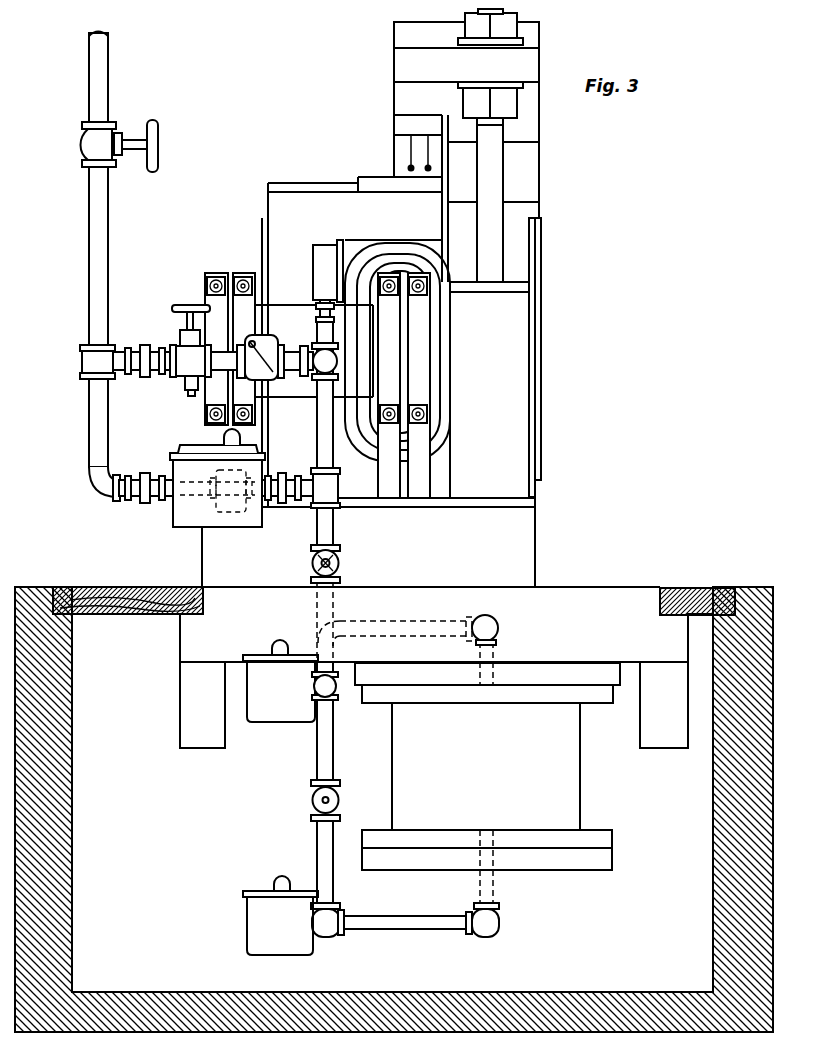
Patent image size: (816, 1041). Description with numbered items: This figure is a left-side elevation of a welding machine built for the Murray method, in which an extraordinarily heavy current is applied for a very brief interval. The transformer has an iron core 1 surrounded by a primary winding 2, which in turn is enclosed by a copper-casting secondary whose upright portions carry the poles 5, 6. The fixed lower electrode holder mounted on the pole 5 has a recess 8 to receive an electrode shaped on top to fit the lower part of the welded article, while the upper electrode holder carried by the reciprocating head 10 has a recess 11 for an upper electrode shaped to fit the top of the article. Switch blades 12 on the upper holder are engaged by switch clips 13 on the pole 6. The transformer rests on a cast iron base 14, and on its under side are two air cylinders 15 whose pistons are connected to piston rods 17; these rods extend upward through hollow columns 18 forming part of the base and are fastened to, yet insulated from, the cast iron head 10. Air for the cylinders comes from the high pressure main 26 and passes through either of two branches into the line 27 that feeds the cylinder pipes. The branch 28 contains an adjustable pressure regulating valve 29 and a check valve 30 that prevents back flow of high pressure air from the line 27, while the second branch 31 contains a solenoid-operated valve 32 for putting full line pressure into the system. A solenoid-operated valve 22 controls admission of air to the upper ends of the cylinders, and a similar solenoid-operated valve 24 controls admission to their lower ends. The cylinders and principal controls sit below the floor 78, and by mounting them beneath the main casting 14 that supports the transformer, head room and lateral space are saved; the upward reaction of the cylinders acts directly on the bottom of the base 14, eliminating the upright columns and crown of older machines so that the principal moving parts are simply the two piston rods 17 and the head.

The iron core 1 is at (278, 318).
The primary winding 2 is at (354, 258).
The pole 5 is at (531, 209).
The pole 6 is at (393, 208).
The recess 8 is at (527, 156).
The reciprocating head 10 is at (404, 32).
The recess 11 is at (530, 133).
The switch blades 12 is at (398, 118).
The switch clips 13 is at (398, 147).
The cast iron base 14 is at (368, 542).
The air cylinders 15 is at (487, 766).
The piston rods 17 is at (495, 172).
The hollow columns 18 is at (508, 329).
The solenoid-operated valve 22 is at (280, 681).
The solenoid-operated valve 24 is at (280, 915).
The high pressure main 26 is at (100, 287).
The line 27 is at (340, 558).
The branch 28 is at (120, 376).
The adjustable pressure regulating valve 29 is at (188, 342).
The check valve 30 is at (268, 347).
The branch 31 is at (126, 480).
The solenoid-operated valve 32 is at (182, 508).
The floor 78 is at (80, 587).